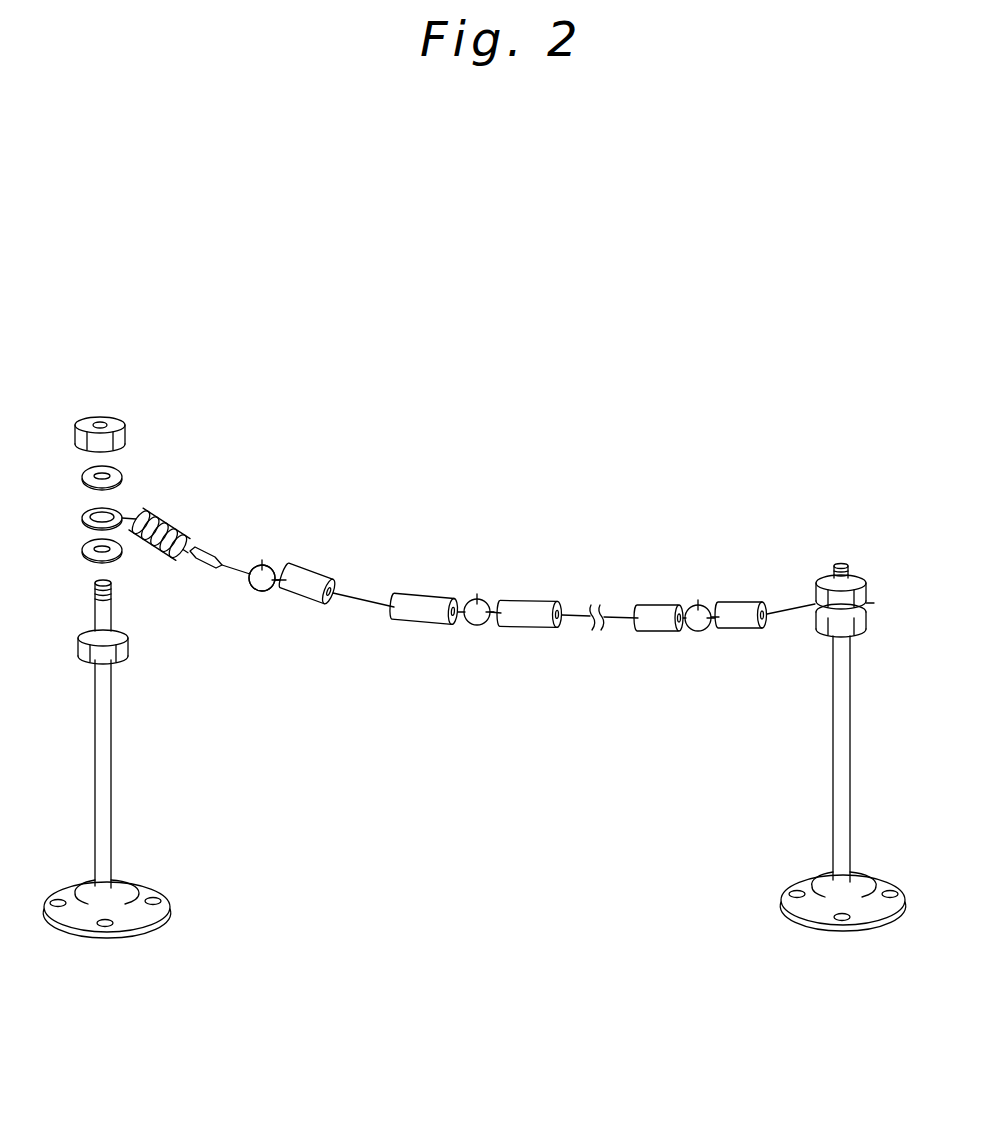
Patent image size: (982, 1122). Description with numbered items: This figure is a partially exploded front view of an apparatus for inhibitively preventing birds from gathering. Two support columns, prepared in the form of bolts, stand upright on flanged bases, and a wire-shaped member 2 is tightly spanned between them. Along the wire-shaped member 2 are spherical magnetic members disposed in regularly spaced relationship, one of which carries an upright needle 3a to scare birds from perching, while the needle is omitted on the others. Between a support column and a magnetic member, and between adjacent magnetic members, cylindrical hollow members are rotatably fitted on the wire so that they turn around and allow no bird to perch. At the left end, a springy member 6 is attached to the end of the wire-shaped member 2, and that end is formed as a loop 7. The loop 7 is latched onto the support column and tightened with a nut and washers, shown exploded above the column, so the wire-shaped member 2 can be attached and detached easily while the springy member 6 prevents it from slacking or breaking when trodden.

The wire-shaped member 2 is at (365, 598).
The needle 3a is at (258, 567).
The springy member 6 is at (165, 525).
The loop 7 is at (80, 518).